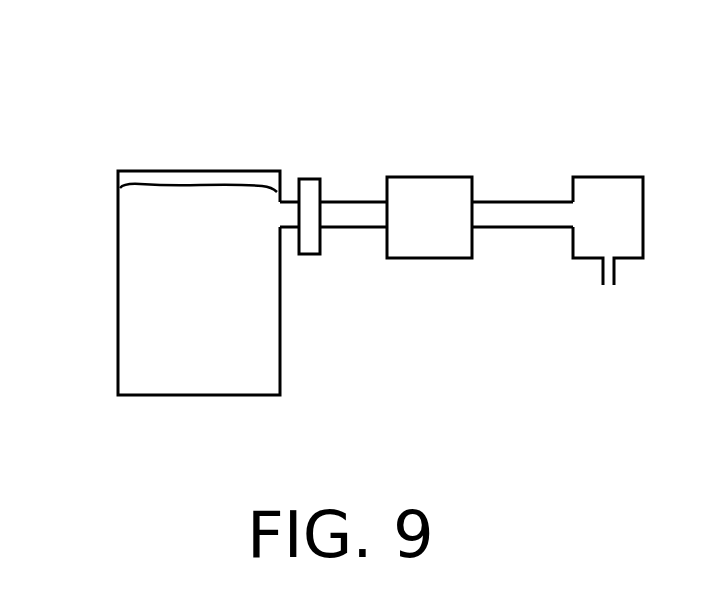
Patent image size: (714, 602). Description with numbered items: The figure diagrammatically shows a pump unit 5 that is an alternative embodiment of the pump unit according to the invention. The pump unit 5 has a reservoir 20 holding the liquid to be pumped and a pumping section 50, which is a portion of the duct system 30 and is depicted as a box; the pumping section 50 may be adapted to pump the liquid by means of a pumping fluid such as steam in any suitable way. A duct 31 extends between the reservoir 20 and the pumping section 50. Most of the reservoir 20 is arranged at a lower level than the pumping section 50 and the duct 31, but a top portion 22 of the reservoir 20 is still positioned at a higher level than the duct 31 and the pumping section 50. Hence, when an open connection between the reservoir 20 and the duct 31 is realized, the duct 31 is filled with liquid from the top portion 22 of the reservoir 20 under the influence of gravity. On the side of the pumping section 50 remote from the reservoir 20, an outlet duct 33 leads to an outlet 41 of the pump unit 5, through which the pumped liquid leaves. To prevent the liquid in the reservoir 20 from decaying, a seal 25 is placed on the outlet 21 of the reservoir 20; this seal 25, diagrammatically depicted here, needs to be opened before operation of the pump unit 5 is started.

The pump unit 5 is at (485, 106).
The reservoir 20 is at (128, 259).
The outlet 21 is at (278, 215).
The top portion 22 is at (192, 178).
The seal 25 is at (310, 243).
The duct system 30 is at (370, 136).
The first duct 31 is at (362, 218).
The outlet duct 33 is at (528, 212).
The outlet 41 is at (605, 287).
The pumping section 50 is at (430, 192).